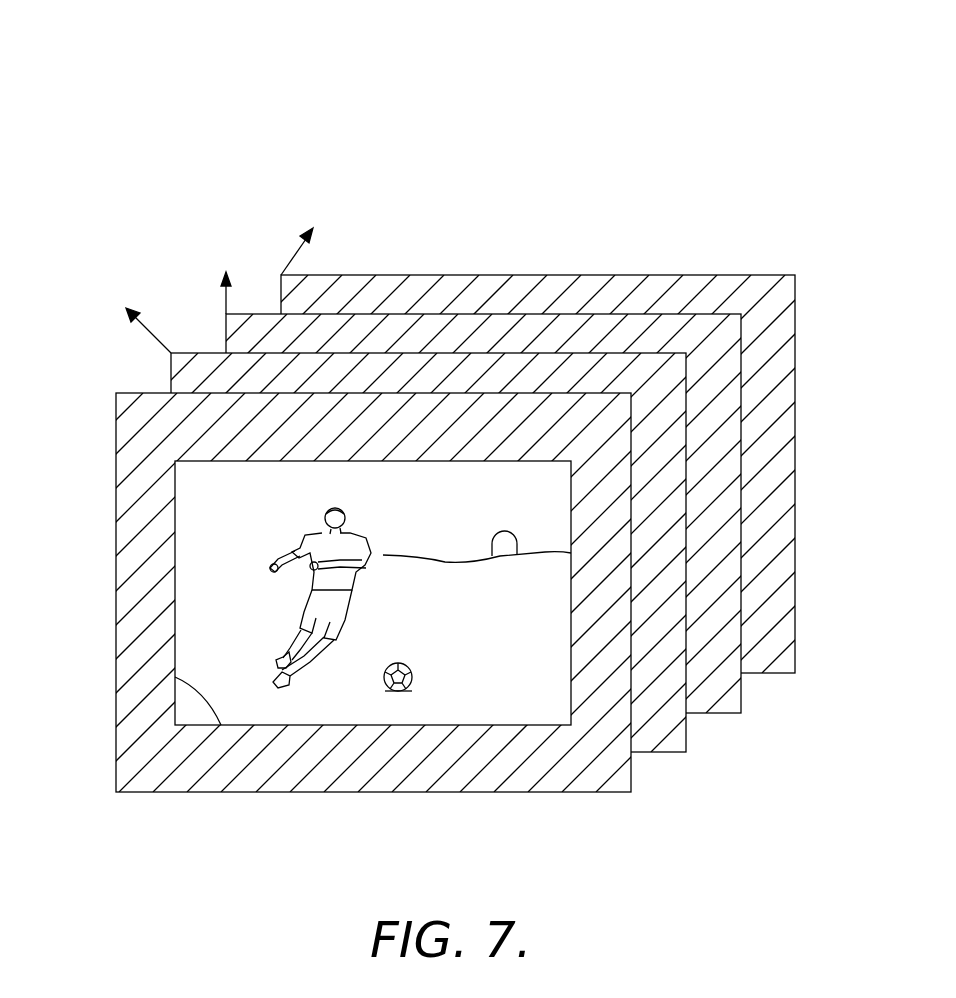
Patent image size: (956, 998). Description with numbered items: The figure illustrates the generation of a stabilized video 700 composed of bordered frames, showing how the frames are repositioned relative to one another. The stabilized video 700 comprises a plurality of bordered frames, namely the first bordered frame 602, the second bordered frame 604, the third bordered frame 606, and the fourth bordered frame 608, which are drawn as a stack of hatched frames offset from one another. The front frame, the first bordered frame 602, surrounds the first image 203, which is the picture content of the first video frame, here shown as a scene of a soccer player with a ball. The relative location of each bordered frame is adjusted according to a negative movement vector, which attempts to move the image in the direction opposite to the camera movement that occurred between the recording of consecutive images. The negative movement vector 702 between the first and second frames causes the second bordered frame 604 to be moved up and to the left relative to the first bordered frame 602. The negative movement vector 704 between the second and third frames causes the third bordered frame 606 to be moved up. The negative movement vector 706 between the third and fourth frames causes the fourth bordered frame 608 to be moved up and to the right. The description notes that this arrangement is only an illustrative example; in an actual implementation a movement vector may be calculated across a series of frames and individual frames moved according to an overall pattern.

The stabilized video 700 is at (262, 72).
The negative movement vector 702 is at (157, 343).
The negative movement vector 704 is at (225, 300).
The negative movement vector 706 is at (300, 248).
The first bordered frame 602 is at (600, 793).
The second bordered frame 604 is at (662, 753).
The third bordered frame 606 is at (722, 714).
The fourth bordered frame 608 is at (769, 675).
The first image 203 is at (555, 712).